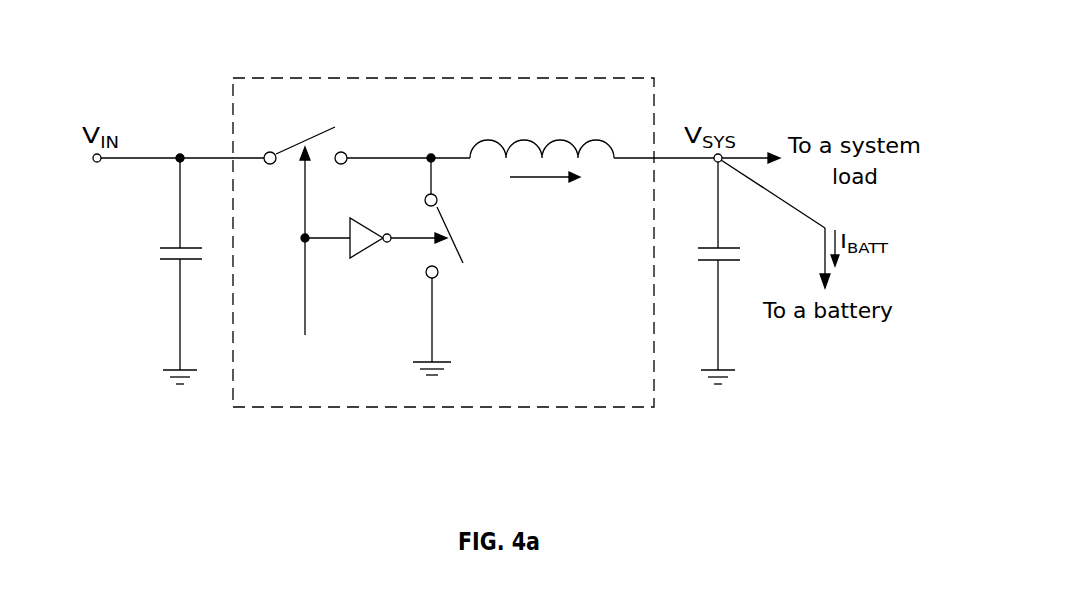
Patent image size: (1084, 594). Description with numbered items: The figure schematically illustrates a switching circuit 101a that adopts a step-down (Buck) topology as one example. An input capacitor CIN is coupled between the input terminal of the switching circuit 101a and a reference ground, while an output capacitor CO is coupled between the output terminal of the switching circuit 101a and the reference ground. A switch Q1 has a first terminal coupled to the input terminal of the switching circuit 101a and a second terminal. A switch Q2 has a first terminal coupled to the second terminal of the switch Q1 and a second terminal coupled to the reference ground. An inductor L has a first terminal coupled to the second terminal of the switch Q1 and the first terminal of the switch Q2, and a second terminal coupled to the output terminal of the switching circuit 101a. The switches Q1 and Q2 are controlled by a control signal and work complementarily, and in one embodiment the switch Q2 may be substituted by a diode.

The switching circuit 101a is at (450, 213).
The switch Q1 is at (305, 132).
The switch Q2 is at (455, 266).
The inductor L is at (542, 131).
The capacitor CIN is at (154, 271).
The capacitor CO is at (742, 273).